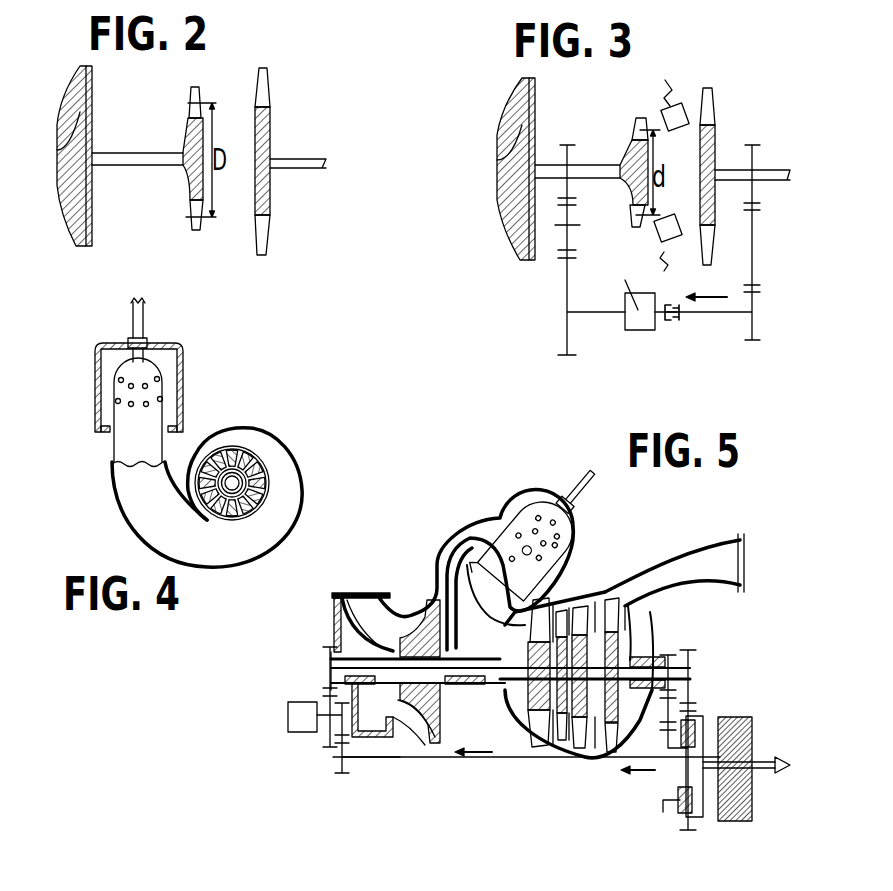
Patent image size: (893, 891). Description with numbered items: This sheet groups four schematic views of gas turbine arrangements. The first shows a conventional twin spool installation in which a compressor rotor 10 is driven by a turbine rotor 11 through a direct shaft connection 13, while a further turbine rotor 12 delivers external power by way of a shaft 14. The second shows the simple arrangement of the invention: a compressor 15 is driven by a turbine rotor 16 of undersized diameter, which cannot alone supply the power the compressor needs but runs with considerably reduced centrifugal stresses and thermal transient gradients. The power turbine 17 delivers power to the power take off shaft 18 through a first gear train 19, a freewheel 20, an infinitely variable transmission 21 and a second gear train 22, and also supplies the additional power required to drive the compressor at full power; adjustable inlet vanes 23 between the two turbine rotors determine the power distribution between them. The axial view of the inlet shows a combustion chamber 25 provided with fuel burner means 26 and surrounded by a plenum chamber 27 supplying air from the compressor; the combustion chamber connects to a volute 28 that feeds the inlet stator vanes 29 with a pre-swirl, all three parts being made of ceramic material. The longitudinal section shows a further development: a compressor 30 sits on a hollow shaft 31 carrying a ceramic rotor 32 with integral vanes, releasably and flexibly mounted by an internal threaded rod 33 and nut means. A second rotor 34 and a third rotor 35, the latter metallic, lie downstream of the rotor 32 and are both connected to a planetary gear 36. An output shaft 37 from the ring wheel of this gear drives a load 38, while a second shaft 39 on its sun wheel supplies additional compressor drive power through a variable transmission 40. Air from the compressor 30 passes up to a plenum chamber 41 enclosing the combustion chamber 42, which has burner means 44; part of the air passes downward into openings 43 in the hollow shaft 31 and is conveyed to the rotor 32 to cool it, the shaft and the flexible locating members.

In FIG. 2, the compressor rotor 10 is at (78, 107).
In FIG. 2, the turbine rotor 11 is at (190, 146).
In FIG. 2, the further turbine rotor 12 is at (272, 124).
In FIG. 2, the direct shaft connection 13 is at (148, 166).
In FIG. 2, the shaft 14 is at (288, 167).
In FIG. 3, the compressor 15 is at (507, 127).
In FIG. 3, the turbine rotor 16 is at (633, 158).
In FIG. 3, the power turbine 17 is at (712, 140).
In FIG. 3, the power take off shaft 18 is at (767, 172).
In FIG. 3, the first gear train 19 is at (740, 247).
In FIG. 3, the freewheel 20 is at (683, 320).
In FIG. 3, the infinitely variable transmission 21 is at (642, 322).
In FIG. 3, the second gear train 22 is at (562, 287).
In FIG. 3, the adjustable inlet vanes 23 is at (682, 118).
In FIG. 4, the combustion chamber 25 is at (130, 397).
In FIG. 4, the fuel burner means 26 is at (143, 317).
In FIG. 4, the plenum chamber 27 is at (186, 393).
In FIG. 4, the volute 28 is at (135, 525).
In FIG. 4, the inlet stator vanes 29 is at (253, 453).
In FIG. 5, the compressor 30 is at (420, 630).
In FIG. 5, the hollow shaft 31 is at (367, 647).
In FIG. 5, the rotor 32 is at (545, 702).
In FIG. 5, the internal threaded rod 33 is at (336, 650).
In FIG. 5, the second rotor 34 is at (592, 608).
In FIG. 5, the third rotor 35 is at (623, 620).
In FIG. 5, the planetary gear 36 is at (698, 717).
In FIG. 5, the output shaft 37 is at (713, 763).
In FIG. 5, the load 38 is at (730, 803).
In FIG. 5, the second shaft 39 is at (590, 760).
In FIG. 5, the variable transmission 40 is at (287, 712).
In FIG. 5, the plenum chamber 41 is at (505, 512).
In FIG. 5, the combustion chamber 42 is at (540, 543).
In FIG. 5, the openings 43 is at (480, 688).
In FIG. 5, the burner means 44 is at (560, 503).